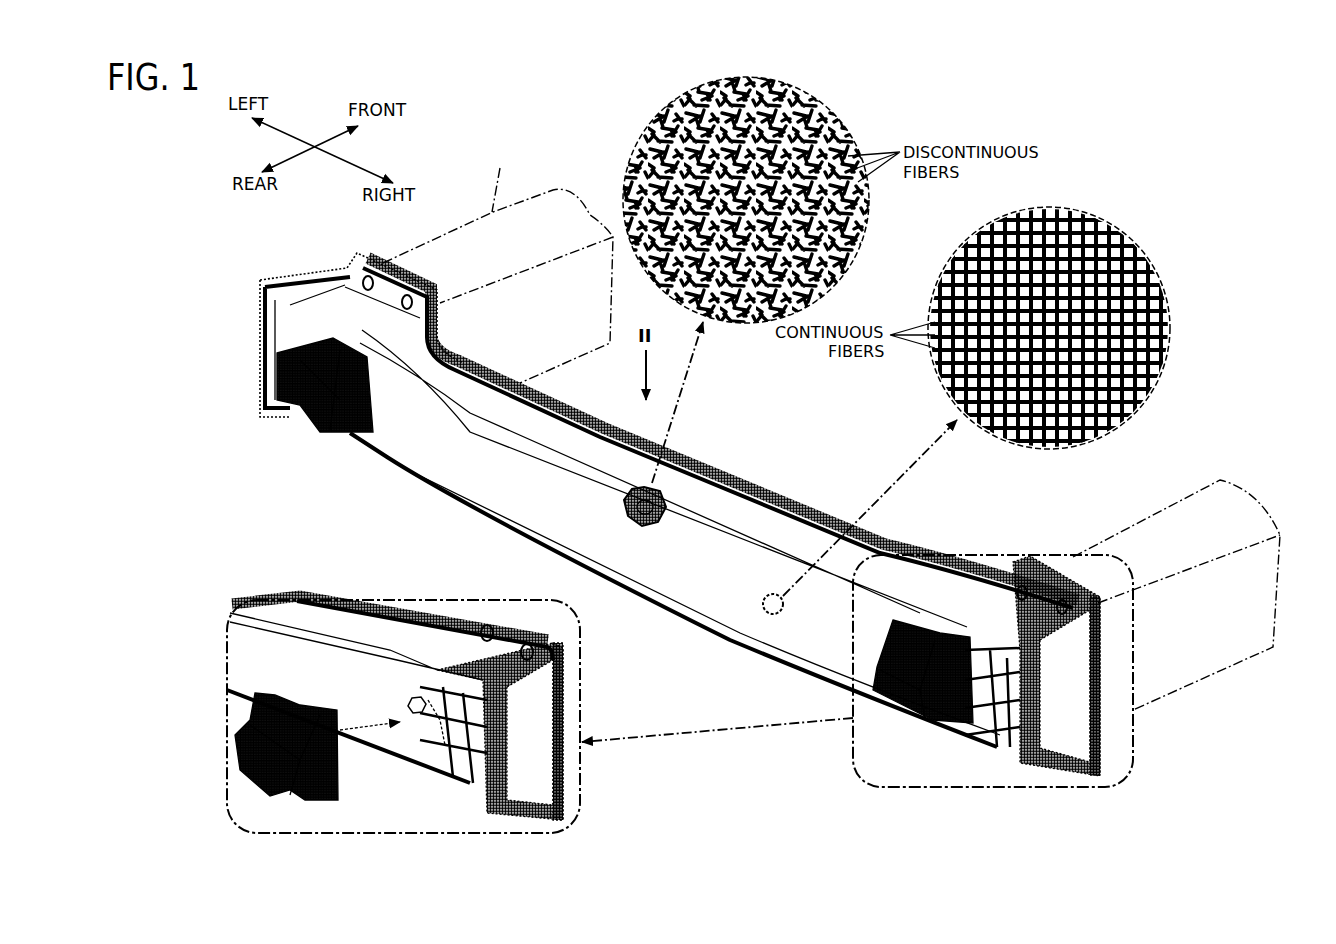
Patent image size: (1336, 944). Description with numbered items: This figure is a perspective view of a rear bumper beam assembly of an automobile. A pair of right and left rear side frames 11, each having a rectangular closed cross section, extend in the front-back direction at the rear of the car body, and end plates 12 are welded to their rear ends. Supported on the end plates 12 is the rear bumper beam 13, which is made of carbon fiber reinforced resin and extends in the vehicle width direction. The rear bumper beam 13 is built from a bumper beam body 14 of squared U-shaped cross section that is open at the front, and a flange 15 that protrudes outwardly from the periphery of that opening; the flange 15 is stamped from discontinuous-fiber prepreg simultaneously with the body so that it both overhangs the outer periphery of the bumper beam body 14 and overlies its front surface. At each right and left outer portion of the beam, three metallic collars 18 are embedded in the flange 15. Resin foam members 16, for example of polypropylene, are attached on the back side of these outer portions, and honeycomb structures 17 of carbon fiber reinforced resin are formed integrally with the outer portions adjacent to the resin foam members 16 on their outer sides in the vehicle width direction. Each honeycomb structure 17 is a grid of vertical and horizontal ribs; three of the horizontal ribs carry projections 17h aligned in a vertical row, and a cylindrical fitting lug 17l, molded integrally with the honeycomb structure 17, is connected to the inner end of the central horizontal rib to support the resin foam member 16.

The rear side frame 11 is at (1243, 709).
The end plate 12 is at (440, 317).
The rear bumper beam 13 is at (818, 446).
The bumper beam body 14 is at (707, 510).
The flange 15 is at (810, 523).
The resin foam member 16 is at (320, 413).
The honeycomb structure 17 is at (303, 287).
The projection 17h is at (445, 745).
The fitting lug 17l is at (410, 703).
The metallic collar 18 is at (410, 300).